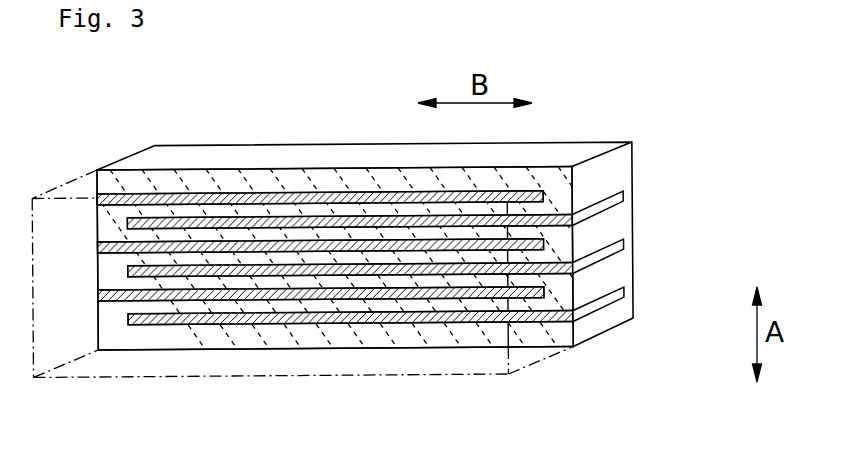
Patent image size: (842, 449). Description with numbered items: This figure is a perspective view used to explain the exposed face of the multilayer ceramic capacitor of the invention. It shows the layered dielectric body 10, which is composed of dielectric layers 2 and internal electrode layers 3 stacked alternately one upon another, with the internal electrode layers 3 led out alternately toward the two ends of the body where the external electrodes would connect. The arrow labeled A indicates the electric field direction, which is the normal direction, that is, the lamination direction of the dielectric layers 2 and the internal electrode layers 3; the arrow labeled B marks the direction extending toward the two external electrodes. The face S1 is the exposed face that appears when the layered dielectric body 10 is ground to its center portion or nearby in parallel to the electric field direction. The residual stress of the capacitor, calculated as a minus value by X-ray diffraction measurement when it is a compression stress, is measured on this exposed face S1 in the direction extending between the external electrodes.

The dielectric layer 2 is at (197, 195).
The internal electrode layer 3 is at (624, 197).
The layered dielectric body 10 is at (620, 110).
The exposed face S1 is at (300, 183).